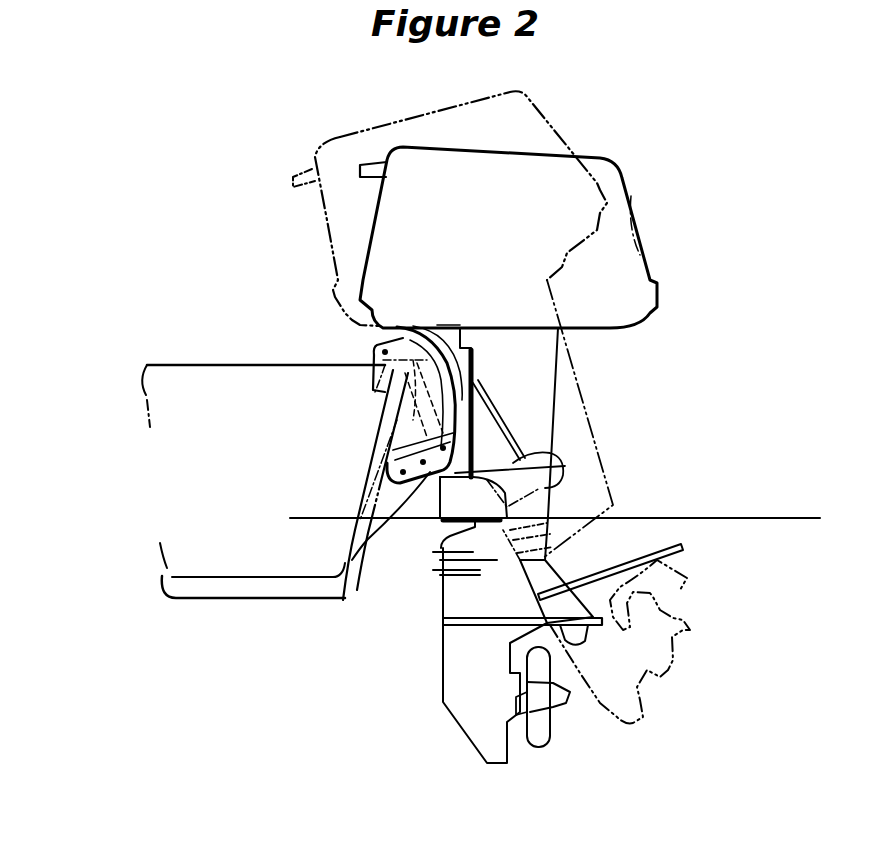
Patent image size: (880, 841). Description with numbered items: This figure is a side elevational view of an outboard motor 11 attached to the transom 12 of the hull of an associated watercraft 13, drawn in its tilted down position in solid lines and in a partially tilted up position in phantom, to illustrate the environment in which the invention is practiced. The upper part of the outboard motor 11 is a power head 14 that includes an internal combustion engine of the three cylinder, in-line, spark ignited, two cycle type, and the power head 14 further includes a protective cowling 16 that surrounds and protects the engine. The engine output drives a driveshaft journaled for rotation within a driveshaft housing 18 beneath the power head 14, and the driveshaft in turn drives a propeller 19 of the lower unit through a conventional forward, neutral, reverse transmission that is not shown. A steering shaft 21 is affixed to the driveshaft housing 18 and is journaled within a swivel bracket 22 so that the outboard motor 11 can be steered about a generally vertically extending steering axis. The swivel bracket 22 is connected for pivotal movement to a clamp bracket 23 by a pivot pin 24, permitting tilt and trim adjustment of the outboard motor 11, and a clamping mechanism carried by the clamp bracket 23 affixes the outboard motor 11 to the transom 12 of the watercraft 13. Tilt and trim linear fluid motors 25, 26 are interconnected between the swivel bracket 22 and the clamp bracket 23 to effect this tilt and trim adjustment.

The outboard motor 11 is at (632, 167).
The transom 12 is at (367, 500).
The watercraft 13 is at (181, 356).
The power head 14 is at (633, 237).
The protective cowling 16 is at (633, 215).
The driveshaft housing 18 is at (543, 403).
The propeller 19 is at (540, 733).
The steering shaft 21 is at (397, 327).
The swivel bracket 22 is at (565, 466).
The clamp bracket 23 is at (380, 377).
The pivot pin 24 is at (383, 352).
The tilt linear fluid motor 25 is at (413, 425).
The trim linear fluid motor 26 is at (360, 537).